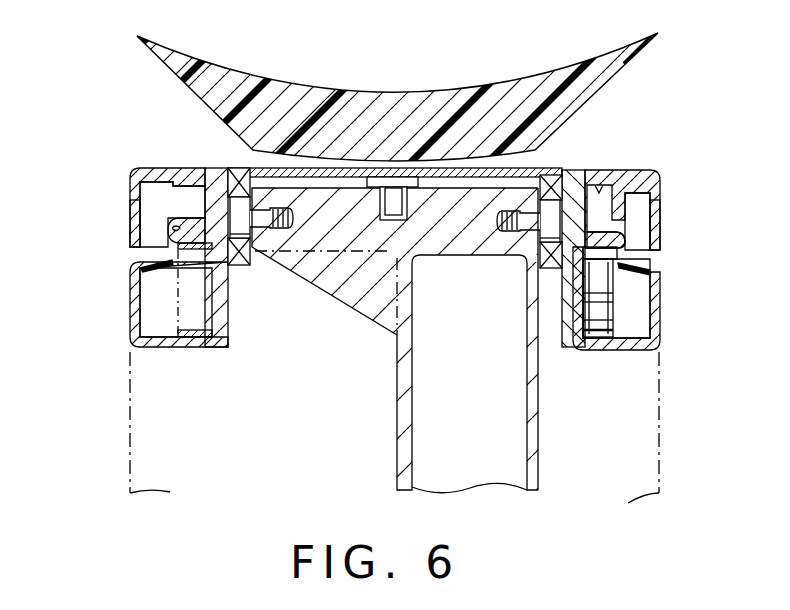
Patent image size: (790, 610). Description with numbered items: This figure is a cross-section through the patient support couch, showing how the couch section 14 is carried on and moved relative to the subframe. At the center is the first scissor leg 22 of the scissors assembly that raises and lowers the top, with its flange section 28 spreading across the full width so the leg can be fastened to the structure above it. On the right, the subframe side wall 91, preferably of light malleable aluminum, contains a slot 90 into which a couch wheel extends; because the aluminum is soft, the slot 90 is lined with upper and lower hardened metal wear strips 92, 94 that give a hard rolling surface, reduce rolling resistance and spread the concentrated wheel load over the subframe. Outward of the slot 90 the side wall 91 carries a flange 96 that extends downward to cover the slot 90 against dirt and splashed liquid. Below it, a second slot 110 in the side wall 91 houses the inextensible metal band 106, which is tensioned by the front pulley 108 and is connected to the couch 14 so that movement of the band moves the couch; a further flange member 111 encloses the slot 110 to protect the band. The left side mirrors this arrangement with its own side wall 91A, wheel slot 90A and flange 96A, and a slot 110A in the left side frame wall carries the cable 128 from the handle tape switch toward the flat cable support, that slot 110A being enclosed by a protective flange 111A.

The couch section 14 is at (426, 80).
The first scissor leg 22 is at (540, 437).
The flange section 28 is at (345, 292).
The slot 90 is at (636, 202).
The upper channel cavity 90A is at (165, 200).
The subframe side wall 91 is at (662, 164).
The channel housing 91A is at (130, 160).
The upper wear strip 92 is at (598, 186).
The lower wear strip 94 is at (603, 230).
The flange 96 is at (662, 232).
The housing side wall 96A is at (128, 231).
The inextensible metal band 106 is at (618, 252).
The front pulley 108 is at (600, 311).
The second slot 110 is at (633, 290).
The slot 110A is at (160, 287).
The further flange member 111 is at (660, 338).
The flange 111A is at (130, 327).
The cable 128 is at (195, 334).